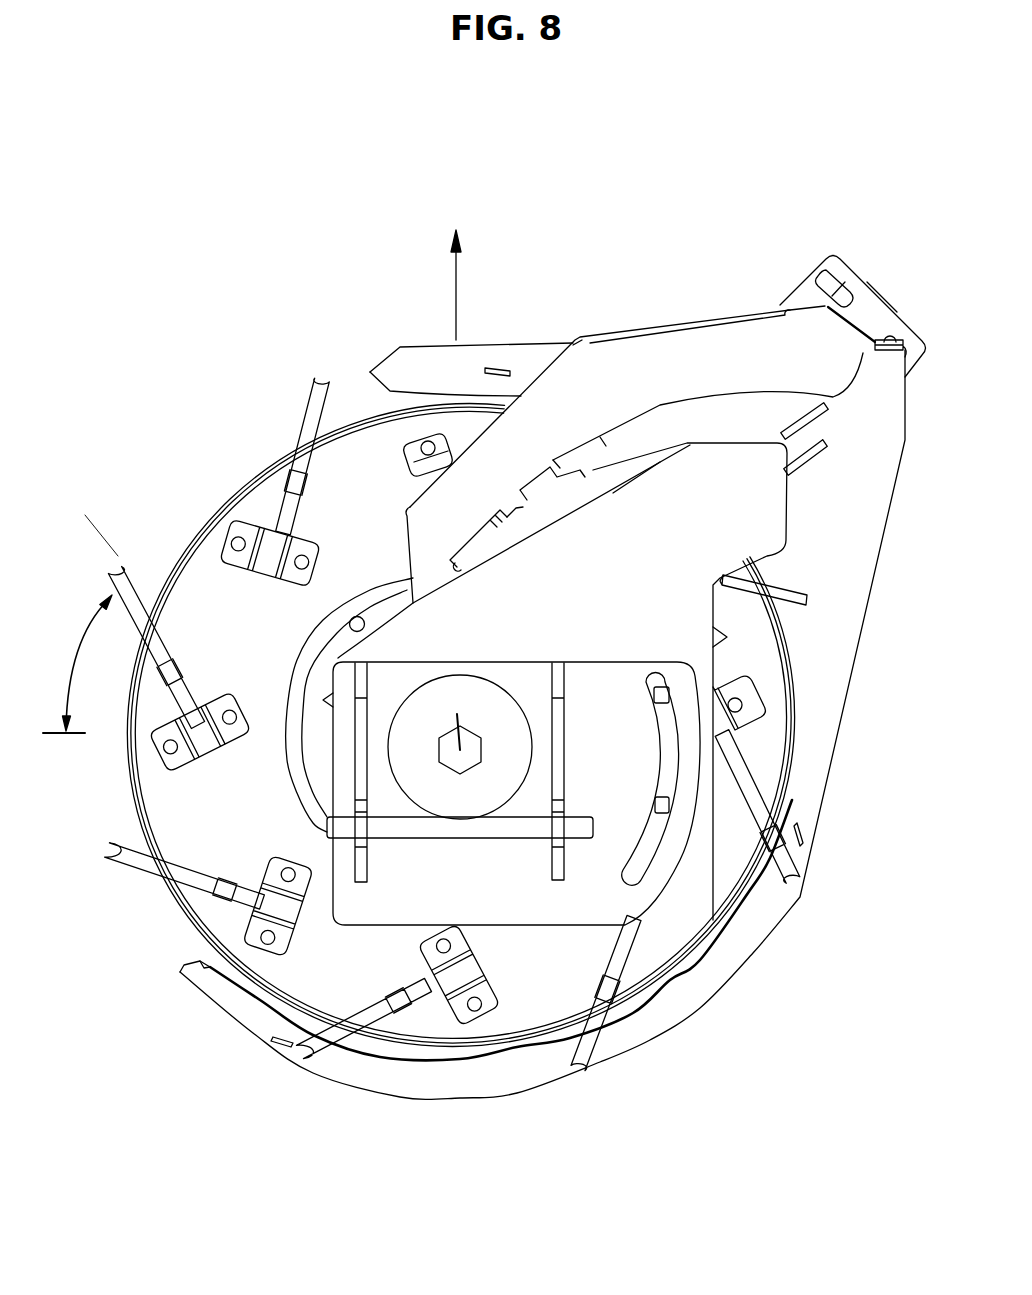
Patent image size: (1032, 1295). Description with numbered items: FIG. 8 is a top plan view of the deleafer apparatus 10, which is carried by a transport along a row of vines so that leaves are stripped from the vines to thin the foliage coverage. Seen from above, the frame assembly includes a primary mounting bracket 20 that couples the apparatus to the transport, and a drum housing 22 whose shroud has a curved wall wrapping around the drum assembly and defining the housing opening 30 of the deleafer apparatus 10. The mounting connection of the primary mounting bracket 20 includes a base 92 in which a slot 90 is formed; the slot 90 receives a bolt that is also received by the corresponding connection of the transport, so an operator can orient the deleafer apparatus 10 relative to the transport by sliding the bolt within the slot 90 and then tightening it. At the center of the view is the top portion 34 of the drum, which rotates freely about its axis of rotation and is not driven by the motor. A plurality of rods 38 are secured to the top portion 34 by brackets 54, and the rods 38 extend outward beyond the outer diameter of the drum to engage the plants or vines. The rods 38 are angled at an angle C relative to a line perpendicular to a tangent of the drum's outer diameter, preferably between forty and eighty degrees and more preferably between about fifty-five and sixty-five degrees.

The deleafer apparatus 10 is at (728, 1077).
The primary mounting bracket 20 is at (717, 607).
The drum housing 22 is at (753, 953).
The housing opening 30 is at (185, 965).
The top portion of the drum 34 is at (528, 1000).
The rods 38 is at (625, 1085).
The brackets 54 is at (230, 700).
The slot 90 is at (658, 758).
The base 92 is at (478, 902).